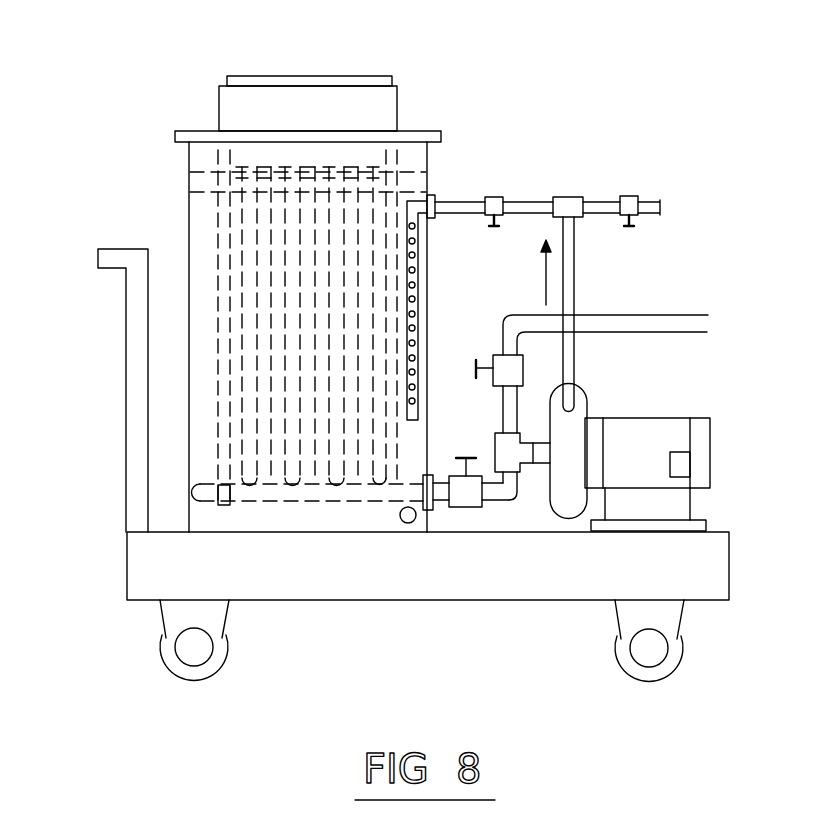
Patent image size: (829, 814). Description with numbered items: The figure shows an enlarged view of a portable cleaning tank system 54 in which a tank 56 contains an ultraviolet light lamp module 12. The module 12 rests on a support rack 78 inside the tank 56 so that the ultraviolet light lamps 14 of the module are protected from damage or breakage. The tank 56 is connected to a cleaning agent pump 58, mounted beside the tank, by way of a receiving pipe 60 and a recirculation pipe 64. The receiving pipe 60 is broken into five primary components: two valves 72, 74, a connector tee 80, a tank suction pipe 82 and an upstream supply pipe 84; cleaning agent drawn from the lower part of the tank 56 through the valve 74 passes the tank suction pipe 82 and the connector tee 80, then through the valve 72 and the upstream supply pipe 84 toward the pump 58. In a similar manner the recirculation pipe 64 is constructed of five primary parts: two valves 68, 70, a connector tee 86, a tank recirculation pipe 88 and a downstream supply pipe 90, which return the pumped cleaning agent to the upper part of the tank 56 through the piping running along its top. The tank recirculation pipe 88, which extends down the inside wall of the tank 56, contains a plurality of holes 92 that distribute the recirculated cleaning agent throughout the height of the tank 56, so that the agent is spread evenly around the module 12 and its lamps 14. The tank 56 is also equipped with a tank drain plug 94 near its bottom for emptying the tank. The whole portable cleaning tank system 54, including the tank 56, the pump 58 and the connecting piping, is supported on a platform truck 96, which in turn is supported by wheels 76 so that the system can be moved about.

The ultraviolet light lamp module 12 is at (266, 76).
The ultraviolet light lamps 14 is at (257, 460).
The portable cleaning tank system 54 is at (160, 155).
The tank 56 is at (180, 131).
The cleaning agent pump 58 is at (710, 435).
The receiving pipe 60 is at (638, 333).
The recirculation pipe 64 is at (652, 200).
The valve 68 is at (494, 197).
The valve 70 is at (626, 196).
The valve 72 is at (493, 356).
The valve 74 is at (465, 508).
The wheels 76 is at (177, 677).
The support rack 78 is at (212, 152).
The connector tee 80 is at (543, 464).
The tank suction pipe 82 is at (510, 500).
The upstream supply pipe 84 is at (672, 315).
The connector tee 86 is at (574, 277).
The tank recirculation pipe 88 is at (452, 200).
The downstream supply pipe 90 is at (660, 213).
The holes 92 is at (415, 256).
The tank drain plug 94 is at (405, 524).
The platform truck 96 is at (126, 437).